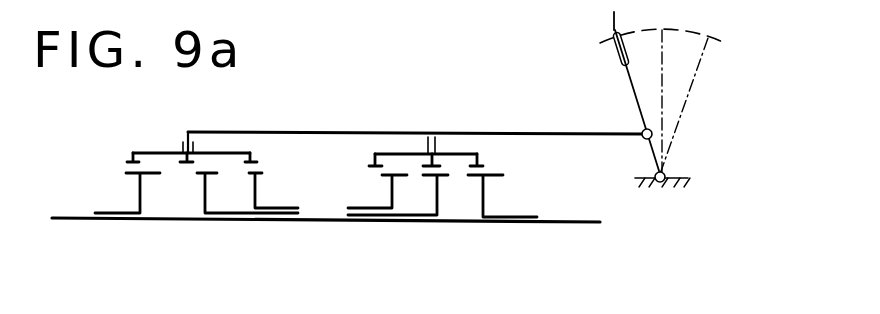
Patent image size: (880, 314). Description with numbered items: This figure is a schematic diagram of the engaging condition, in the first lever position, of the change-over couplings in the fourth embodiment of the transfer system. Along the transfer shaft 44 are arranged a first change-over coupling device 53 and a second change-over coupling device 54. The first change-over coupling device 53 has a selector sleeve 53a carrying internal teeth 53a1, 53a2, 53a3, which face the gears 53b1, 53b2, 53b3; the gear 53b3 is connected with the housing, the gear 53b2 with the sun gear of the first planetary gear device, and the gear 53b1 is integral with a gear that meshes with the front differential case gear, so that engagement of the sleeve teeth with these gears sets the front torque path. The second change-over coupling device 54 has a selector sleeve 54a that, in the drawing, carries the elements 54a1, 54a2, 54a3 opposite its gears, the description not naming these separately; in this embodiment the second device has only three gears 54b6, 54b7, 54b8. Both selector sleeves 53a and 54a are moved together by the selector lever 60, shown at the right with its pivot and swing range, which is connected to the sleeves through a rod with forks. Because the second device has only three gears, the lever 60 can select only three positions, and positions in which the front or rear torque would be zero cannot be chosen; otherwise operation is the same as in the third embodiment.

The transfer shaft 44 is at (332, 223).
The first change-over coupling device 53 is at (192, 185).
The selector sleeve 53a is at (220, 153).
The internal teeth 53a1 is at (130, 162).
The internal teeth 53a2 is at (181, 153).
The internal teeth 53a3 is at (257, 161).
The gear 53b1 is at (128, 177).
The gear 53b2 is at (204, 175).
The gear 53b3 is at (257, 176).
The second change-over coupling device 54 is at (433, 185).
The selector sleeve 54a is at (408, 153).
The first movable contact of second switch 54a1 is at (374, 163).
The second movable contact of second switch 54a2 is at (436, 163).
The third movable contact of second switch 54a3 is at (480, 162).
The gear 54b6 is at (383, 176).
The gear 54b7 is at (442, 177).
The gear 54b8 is at (498, 177).
The selector lever 60 is at (637, 102).